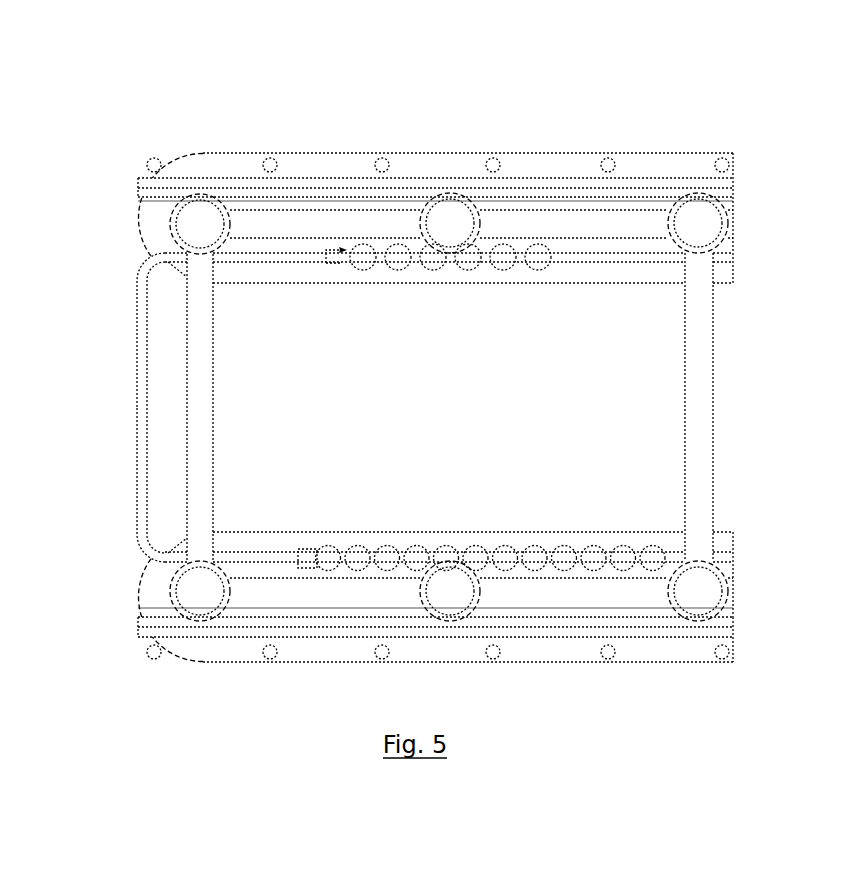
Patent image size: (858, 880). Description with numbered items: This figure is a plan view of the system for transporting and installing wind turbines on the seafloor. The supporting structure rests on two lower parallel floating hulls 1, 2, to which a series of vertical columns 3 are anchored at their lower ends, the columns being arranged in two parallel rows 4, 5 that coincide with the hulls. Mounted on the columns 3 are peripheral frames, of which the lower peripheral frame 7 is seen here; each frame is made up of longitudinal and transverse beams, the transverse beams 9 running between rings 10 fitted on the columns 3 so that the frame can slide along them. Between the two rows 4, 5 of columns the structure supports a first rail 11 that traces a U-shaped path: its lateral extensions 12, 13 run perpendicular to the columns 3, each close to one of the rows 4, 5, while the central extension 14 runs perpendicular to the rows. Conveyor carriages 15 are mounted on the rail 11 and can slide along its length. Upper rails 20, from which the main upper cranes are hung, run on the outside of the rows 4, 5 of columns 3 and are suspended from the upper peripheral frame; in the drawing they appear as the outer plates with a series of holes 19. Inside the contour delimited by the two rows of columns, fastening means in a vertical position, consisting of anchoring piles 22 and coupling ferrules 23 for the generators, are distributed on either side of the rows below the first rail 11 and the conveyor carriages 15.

The floating hull 1 is at (734, 632).
The floating hull 2 is at (734, 221).
The vertical column 3 is at (197, 212).
The row of columns 4 is at (168, 590).
The row of columns 5 is at (170, 225).
The lower peripheral frame 7 is at (613, 227).
The transverse beam 9 is at (200, 425).
The ring 10 is at (218, 208).
The first rail 11 is at (137, 518).
The lateral extension 12 is at (734, 555).
The lateral extension 13 is at (734, 258).
The central extension 14 is at (145, 393).
The conveyor carriage 15 is at (333, 263).
The hole 19 is at (384, 160).
The upper rail 20 is at (140, 192).
The anchoring pile 22 is at (592, 550).
The coupling ferrule 23 is at (505, 269).